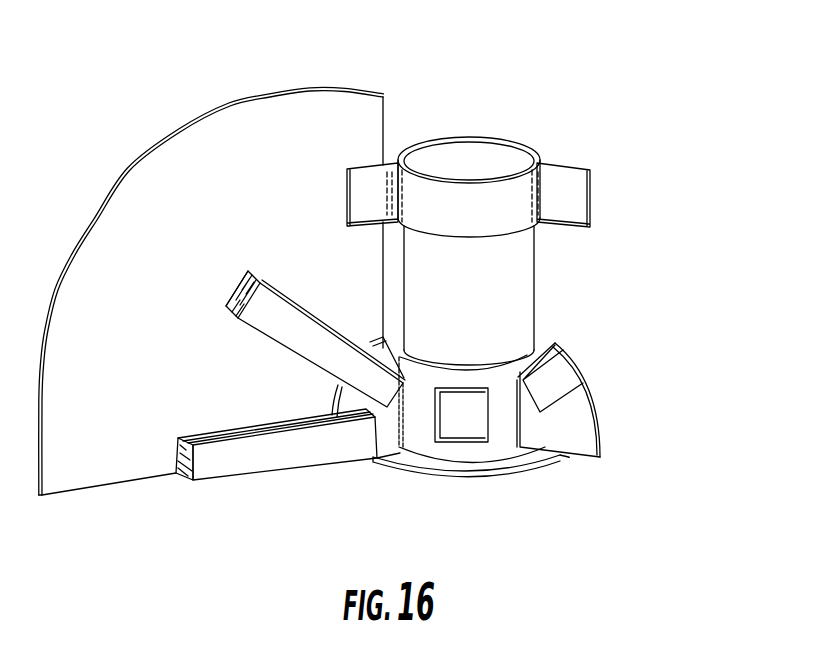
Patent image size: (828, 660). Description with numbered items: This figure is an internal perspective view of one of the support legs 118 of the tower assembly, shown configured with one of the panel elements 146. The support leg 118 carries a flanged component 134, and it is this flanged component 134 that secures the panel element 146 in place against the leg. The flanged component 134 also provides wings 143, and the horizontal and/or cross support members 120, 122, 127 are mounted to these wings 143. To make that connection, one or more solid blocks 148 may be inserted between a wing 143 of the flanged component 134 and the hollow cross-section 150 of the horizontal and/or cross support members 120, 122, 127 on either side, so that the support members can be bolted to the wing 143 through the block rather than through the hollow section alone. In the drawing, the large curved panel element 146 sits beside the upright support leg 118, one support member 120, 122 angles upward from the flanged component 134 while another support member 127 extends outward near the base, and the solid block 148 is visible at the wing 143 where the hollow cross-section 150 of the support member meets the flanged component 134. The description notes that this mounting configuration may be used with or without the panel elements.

The support leg 118 is at (540, 270).
The horizontal and/or cross support member 120 is at (414, 225).
The horizontal and/or cross support member 122 is at (368, 257).
The horizontal and/or cross support member 127 is at (285, 458).
The flanged component 134 is at (553, 467).
The wing 143 is at (572, 435).
The panel element 146 is at (82, 468).
The solid block 148 is at (558, 387).
The hollow cross-section 150 is at (259, 280).